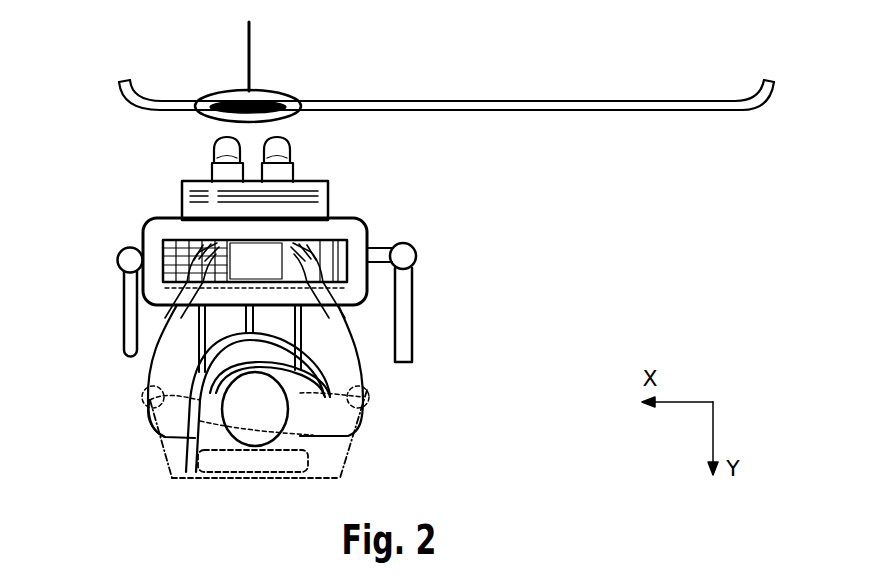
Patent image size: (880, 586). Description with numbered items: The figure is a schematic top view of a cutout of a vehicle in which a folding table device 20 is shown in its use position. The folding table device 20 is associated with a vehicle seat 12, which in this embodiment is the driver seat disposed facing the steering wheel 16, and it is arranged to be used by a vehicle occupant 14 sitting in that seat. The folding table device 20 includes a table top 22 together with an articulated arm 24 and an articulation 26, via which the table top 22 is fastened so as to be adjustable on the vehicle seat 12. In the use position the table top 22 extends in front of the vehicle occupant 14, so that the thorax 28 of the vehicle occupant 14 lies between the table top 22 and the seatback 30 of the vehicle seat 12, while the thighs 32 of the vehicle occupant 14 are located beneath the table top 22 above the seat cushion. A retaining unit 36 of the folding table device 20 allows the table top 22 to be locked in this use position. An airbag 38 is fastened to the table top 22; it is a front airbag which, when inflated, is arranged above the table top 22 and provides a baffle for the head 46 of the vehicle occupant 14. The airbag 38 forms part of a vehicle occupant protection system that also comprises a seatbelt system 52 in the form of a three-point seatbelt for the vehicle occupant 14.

The vehicle seat 12 is at (356, 465).
The vehicle occupant 14 is at (366, 380).
The steering wheel 16 is at (200, 102).
The folding table device 20 is at (343, 210).
The table top 22 is at (357, 233).
The articulated arm 24 is at (403, 312).
The articulation 26 is at (403, 257).
The thorax 28 is at (190, 357).
The seatback 30 is at (330, 452).
The thighs 32 is at (192, 320).
The retaining unit 36 is at (126, 281).
The airbag 38 is at (188, 287).
The head 46 is at (184, 432).
The seatbelt system 52 is at (185, 410).